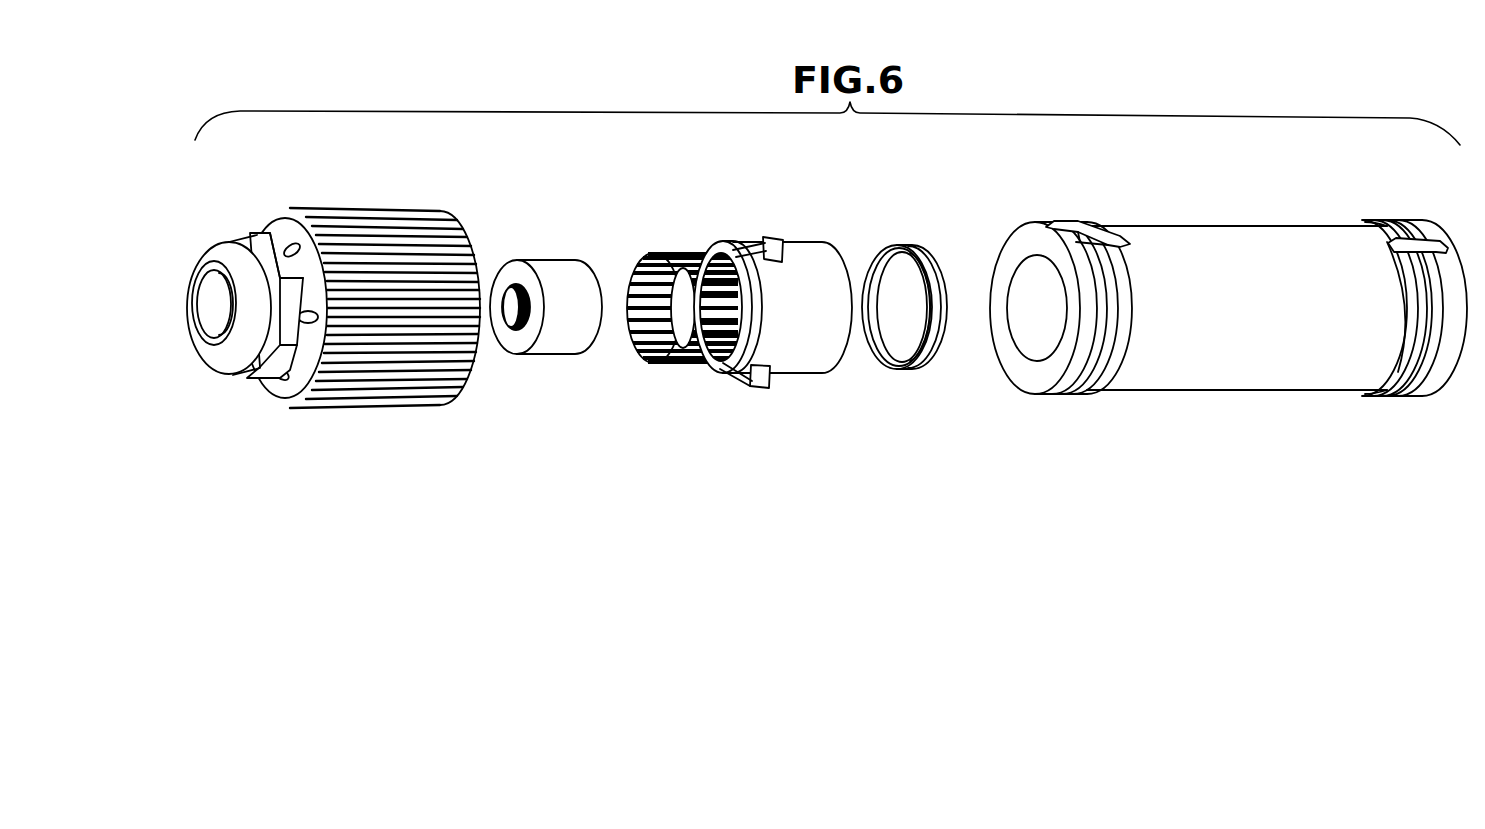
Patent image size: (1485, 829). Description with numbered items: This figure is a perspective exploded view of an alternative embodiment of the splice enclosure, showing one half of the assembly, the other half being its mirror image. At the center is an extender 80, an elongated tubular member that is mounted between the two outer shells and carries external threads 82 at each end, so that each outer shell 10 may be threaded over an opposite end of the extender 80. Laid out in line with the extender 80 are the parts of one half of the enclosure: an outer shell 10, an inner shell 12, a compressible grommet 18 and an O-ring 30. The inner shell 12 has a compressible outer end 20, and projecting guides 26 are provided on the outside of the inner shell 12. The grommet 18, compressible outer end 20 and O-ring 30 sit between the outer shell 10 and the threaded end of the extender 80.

The outer shell 10 is at (385, 207).
The compressible grommet 18 is at (556, 262).
The compressible outer end 20 is at (677, 253).
The inner shell 12 is at (808, 235).
The projecting guide 26 is at (752, 390).
The O-ring 30 is at (910, 246).
The extender 80 is at (1250, 224).
The external threads 82 is at (1087, 221).